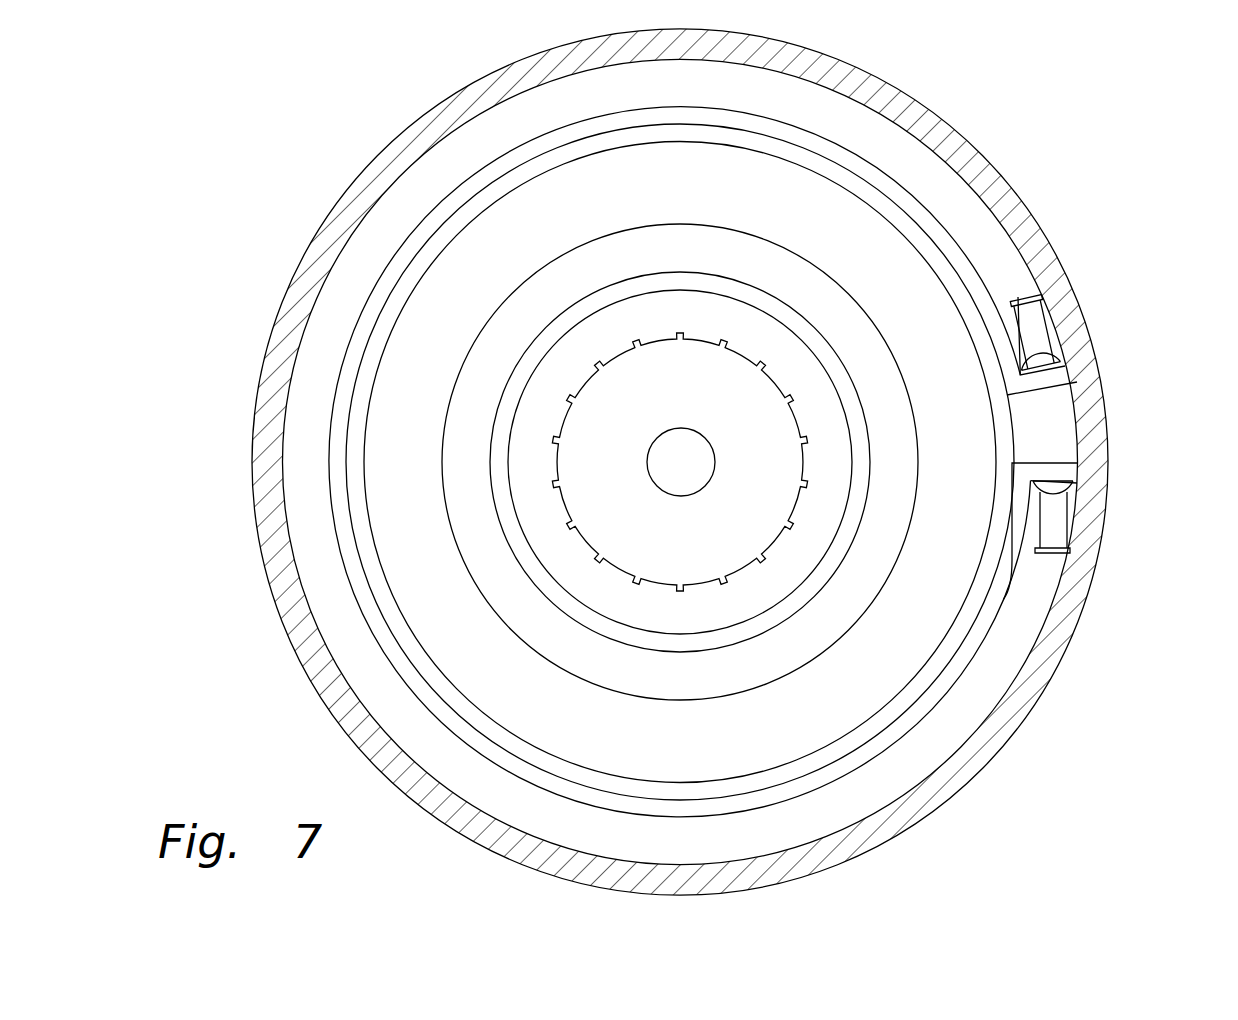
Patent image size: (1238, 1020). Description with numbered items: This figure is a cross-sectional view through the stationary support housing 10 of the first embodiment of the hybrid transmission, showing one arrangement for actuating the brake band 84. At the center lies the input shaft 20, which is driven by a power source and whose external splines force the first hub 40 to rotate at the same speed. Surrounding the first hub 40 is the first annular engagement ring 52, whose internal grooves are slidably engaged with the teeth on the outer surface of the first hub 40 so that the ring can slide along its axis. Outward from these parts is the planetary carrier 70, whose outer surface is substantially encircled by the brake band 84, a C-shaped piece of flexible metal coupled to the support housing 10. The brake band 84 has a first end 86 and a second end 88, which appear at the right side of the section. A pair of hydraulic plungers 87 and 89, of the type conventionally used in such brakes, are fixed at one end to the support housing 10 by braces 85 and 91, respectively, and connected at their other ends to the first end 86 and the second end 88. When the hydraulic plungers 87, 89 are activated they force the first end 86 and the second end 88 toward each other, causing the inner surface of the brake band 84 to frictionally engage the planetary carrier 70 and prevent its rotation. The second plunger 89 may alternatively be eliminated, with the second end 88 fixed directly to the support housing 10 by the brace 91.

The support housing 10 is at (998, 150).
The input shaft 20 is at (697, 475).
The first hub 40 is at (693, 557).
The first annular engagement ring 52 is at (588, 575).
The planetary carrier 70 is at (695, 694).
The brake band 84 is at (838, 798).
The brace 85 is at (1040, 290).
The first end 86 is at (1050, 378).
The hydraulic plunger 87 is at (1072, 316).
The second end 88 is at (1053, 473).
The hydraulic plunger 89 is at (1067, 517).
The brace 91 is at (1048, 554).